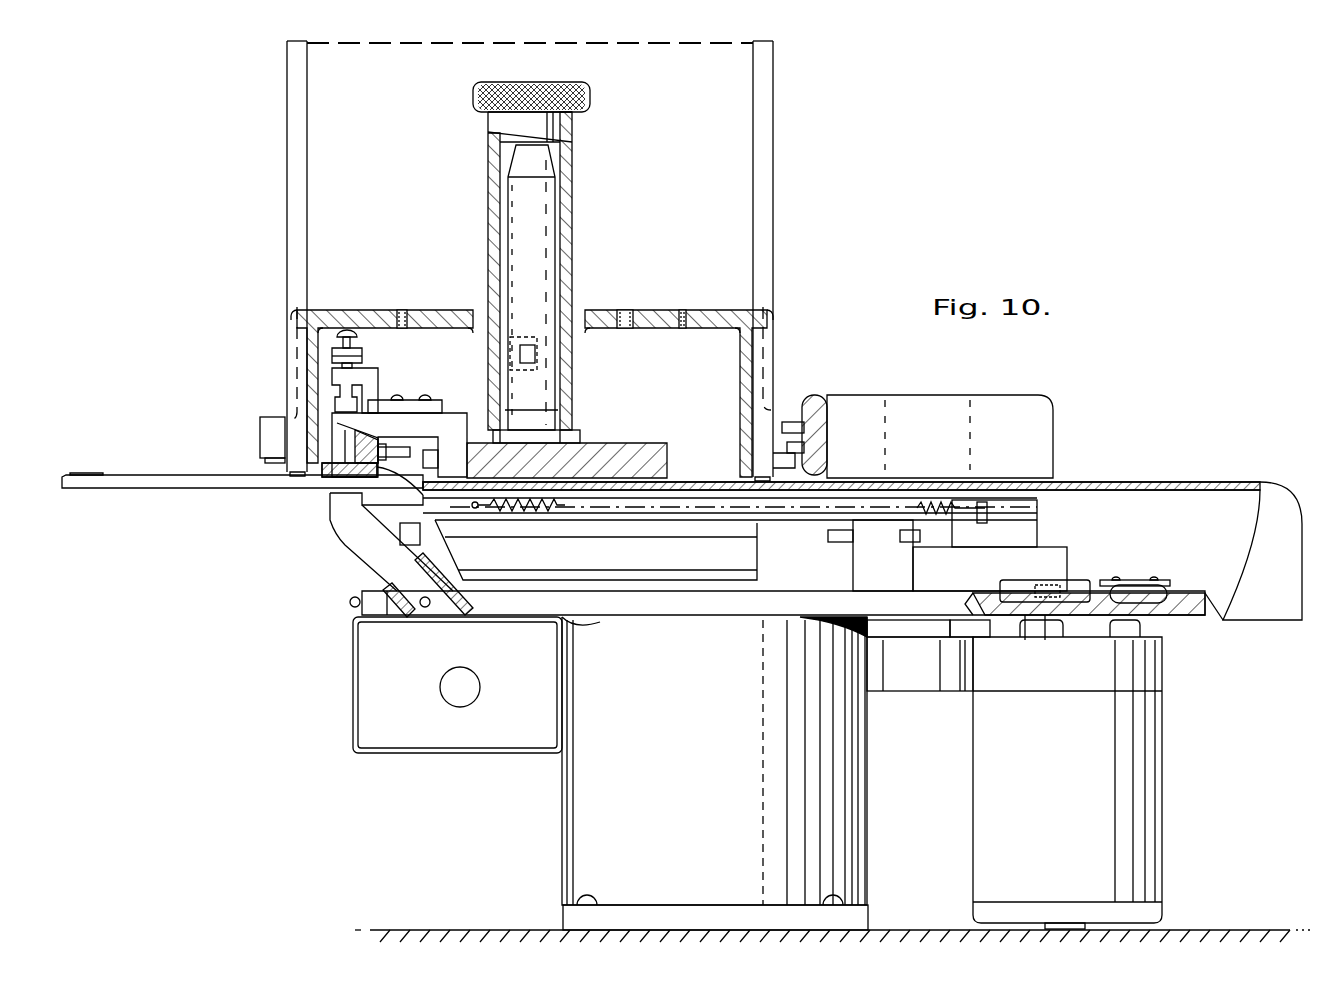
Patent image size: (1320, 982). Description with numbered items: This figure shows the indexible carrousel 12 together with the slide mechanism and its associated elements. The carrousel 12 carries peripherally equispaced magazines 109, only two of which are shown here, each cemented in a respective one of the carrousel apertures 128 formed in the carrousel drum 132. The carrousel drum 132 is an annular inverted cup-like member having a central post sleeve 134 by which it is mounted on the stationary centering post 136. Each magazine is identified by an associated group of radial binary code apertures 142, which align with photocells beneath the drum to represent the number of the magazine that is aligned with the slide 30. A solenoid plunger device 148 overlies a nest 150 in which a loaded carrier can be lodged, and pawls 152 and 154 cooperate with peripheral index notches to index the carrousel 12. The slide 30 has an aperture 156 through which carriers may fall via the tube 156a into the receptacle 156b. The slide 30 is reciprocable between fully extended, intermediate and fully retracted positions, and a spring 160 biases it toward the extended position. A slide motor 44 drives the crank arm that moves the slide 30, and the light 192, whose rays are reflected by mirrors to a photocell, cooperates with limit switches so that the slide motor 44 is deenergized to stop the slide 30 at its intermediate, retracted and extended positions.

The carrousel 12 is at (717, 306).
The slide 30 is at (150, 486).
The slide motor 44 is at (1140, 705).
The magazines 109 is at (287, 172).
The carrousel apertures 128 is at (282, 414).
The carrousel drum 132 is at (455, 294).
The central post sleeve 134 is at (572, 214).
The stationary centering post 136 is at (540, 262).
The radial binary code apertures 142 is at (398, 308).
The solenoid plunger device 148 is at (374, 358).
The nest 150 is at (707, 508).
The pawl 152 is at (827, 447).
The pawl 154 is at (823, 428).
The aperture 156 is at (268, 486).
The tube 156a is at (332, 517).
The receptacle 156b is at (410, 668).
The spring 160 is at (557, 508).
The light 192 is at (1120, 583).